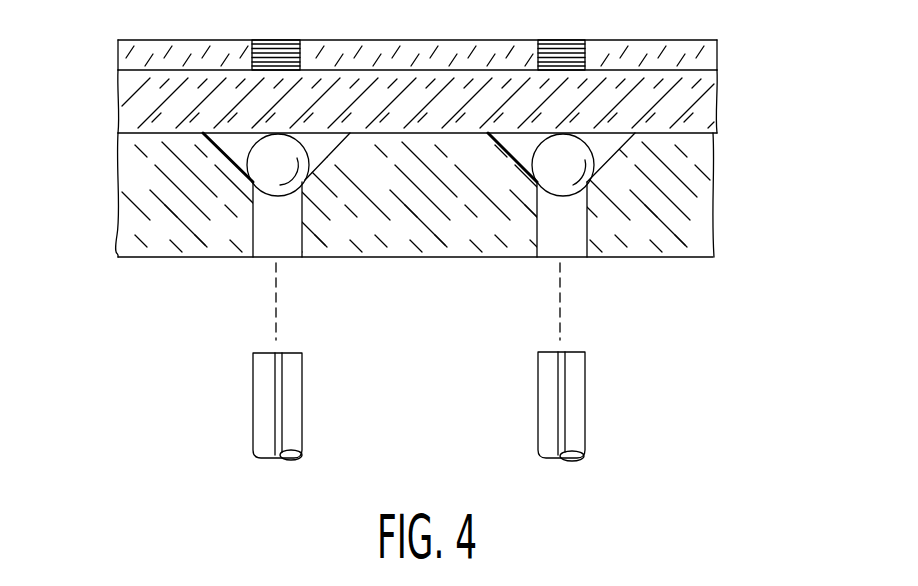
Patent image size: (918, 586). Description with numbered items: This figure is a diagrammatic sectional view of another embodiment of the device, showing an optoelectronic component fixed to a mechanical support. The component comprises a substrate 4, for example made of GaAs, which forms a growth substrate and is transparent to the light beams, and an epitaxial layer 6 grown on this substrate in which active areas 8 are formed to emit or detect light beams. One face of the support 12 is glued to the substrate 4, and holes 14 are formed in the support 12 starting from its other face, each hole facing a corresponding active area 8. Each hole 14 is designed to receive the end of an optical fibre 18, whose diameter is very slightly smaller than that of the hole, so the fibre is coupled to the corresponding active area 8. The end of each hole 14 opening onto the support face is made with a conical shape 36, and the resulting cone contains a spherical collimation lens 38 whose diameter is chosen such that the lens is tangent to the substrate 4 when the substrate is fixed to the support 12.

The substrate 4 is at (704, 110).
The epitaxial layer 6 is at (700, 55).
The active areas 8 is at (270, 48).
The support 12 is at (690, 178).
The holes 14 is at (300, 237).
The optical fibre 18 is at (292, 407).
The conical shape 36 is at (212, 143).
The spherical collimation lens 38 is at (262, 175).